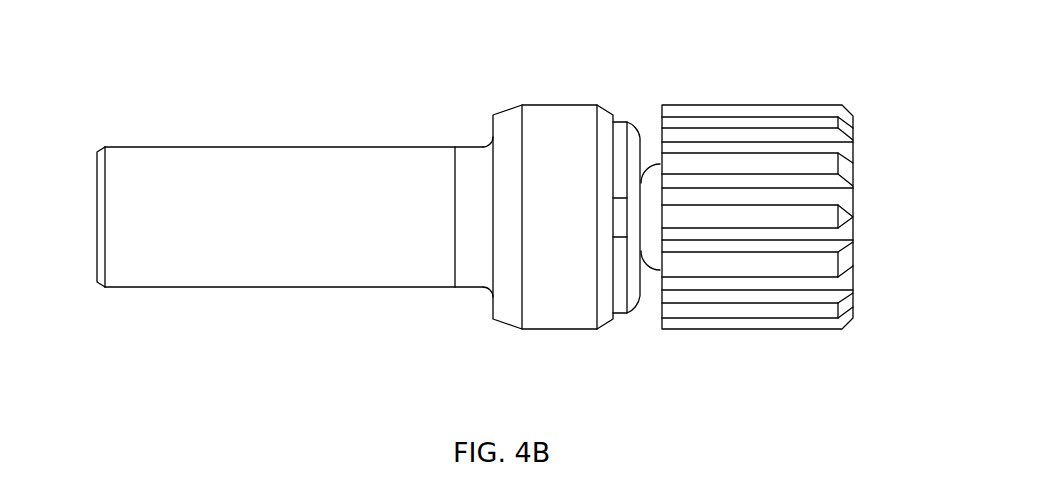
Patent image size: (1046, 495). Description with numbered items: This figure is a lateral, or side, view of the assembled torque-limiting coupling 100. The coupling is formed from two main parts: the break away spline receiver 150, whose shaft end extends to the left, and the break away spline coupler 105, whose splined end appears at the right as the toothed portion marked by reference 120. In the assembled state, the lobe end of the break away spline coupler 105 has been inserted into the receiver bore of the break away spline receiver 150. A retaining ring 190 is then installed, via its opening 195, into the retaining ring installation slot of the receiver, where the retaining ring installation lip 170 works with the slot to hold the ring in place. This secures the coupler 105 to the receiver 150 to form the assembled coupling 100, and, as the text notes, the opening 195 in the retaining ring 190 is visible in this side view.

The torque-limiting coupling 100 is at (316, 60).
The break away spline coupler 105 is at (807, 178).
The gear teeth 120 is at (865, 190).
The break away spline receiver 150 is at (136, 109).
The retaining ring installation lip 170 is at (635, 130).
The retaining ring 190 is at (627, 121).
The opening 195 is at (618, 215).